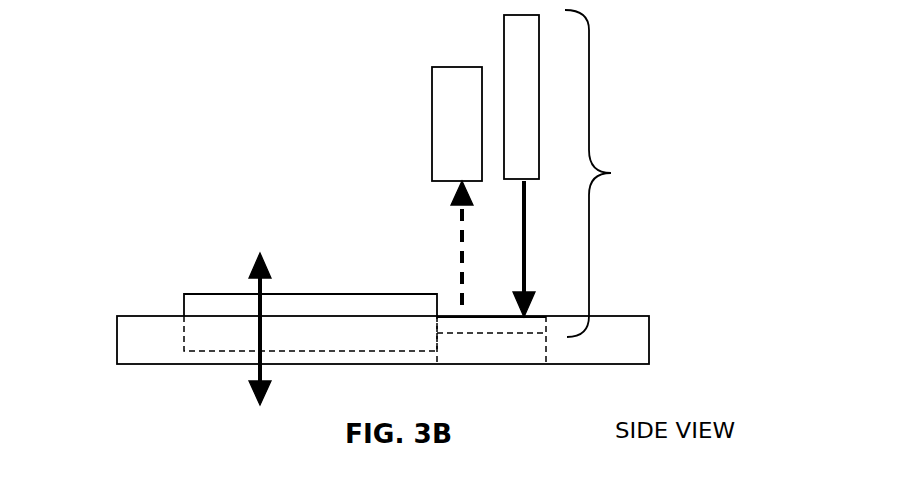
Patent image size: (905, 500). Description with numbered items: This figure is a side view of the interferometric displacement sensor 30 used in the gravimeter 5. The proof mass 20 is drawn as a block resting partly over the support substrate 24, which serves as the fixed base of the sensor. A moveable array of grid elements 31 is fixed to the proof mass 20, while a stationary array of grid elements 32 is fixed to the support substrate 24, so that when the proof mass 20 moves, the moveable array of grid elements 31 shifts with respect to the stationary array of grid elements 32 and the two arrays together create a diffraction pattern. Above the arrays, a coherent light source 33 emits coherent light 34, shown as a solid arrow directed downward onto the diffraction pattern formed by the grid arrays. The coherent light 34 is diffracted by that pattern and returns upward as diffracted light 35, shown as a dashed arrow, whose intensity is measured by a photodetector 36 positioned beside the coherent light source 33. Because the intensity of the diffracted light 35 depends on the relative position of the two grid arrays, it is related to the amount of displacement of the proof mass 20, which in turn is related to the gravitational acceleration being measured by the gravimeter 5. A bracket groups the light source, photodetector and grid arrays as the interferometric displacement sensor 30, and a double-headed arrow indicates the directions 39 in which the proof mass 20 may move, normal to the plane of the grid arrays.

The gravimeter 5 is at (630, 65).
The proof mass 20 is at (218, 308).
The support substrate 24 is at (137, 339).
The interferometric displacement sensor 30 is at (614, 173).
The moveable array of grid elements 31 is at (488, 325).
The stationary array of grid elements 32 is at (511, 322).
The coherent light source 33 is at (457, 140).
The coherent light 34 is at (520, 232).
The diffracted light 35 is at (462, 265).
The photodetector 36 is at (520, 45).
The directions 39 is at (250, 396).